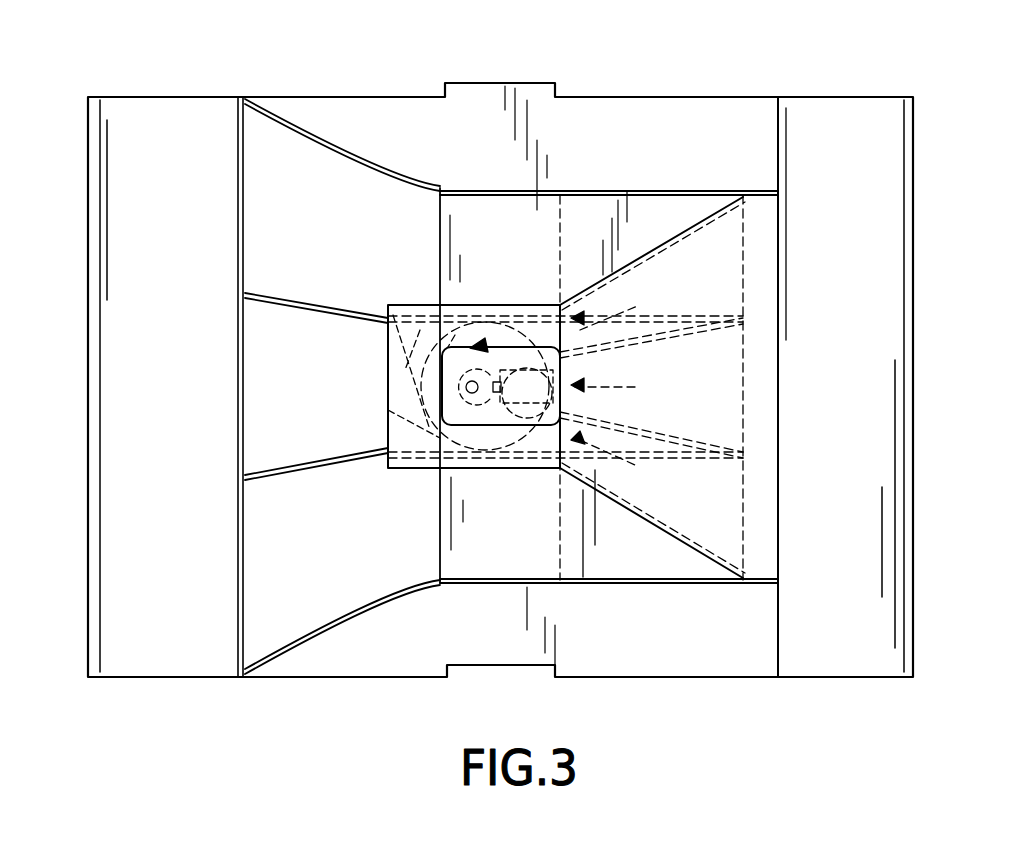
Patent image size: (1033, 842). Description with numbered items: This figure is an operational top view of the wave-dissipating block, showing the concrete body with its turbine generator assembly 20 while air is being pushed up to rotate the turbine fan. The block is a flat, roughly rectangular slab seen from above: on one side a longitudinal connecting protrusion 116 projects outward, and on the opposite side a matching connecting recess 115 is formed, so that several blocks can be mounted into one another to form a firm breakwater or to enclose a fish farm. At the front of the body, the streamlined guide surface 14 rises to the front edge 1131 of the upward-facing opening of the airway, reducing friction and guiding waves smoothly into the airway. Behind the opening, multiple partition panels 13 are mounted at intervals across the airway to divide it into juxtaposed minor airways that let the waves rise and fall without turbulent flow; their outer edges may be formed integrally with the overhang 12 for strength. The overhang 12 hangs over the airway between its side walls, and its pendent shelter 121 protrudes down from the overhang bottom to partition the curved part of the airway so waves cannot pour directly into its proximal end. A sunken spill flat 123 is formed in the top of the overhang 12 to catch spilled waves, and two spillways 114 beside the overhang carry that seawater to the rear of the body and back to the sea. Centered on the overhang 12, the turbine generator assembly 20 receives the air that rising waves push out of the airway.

The guide surface 14 is at (112, 373).
The front edge 1131 is at (240, 132).
The spillways 114 is at (660, 112).
The connecting protrusion 116 is at (500, 92).
The connecting recess 115 is at (480, 668).
The sunken spill flat 123 is at (530, 205).
The pendent shelter 121 is at (555, 240).
The overhang 12 is at (433, 521).
The partition panels 13 is at (275, 296).
The turbine generator assembly 20 is at (572, 369).